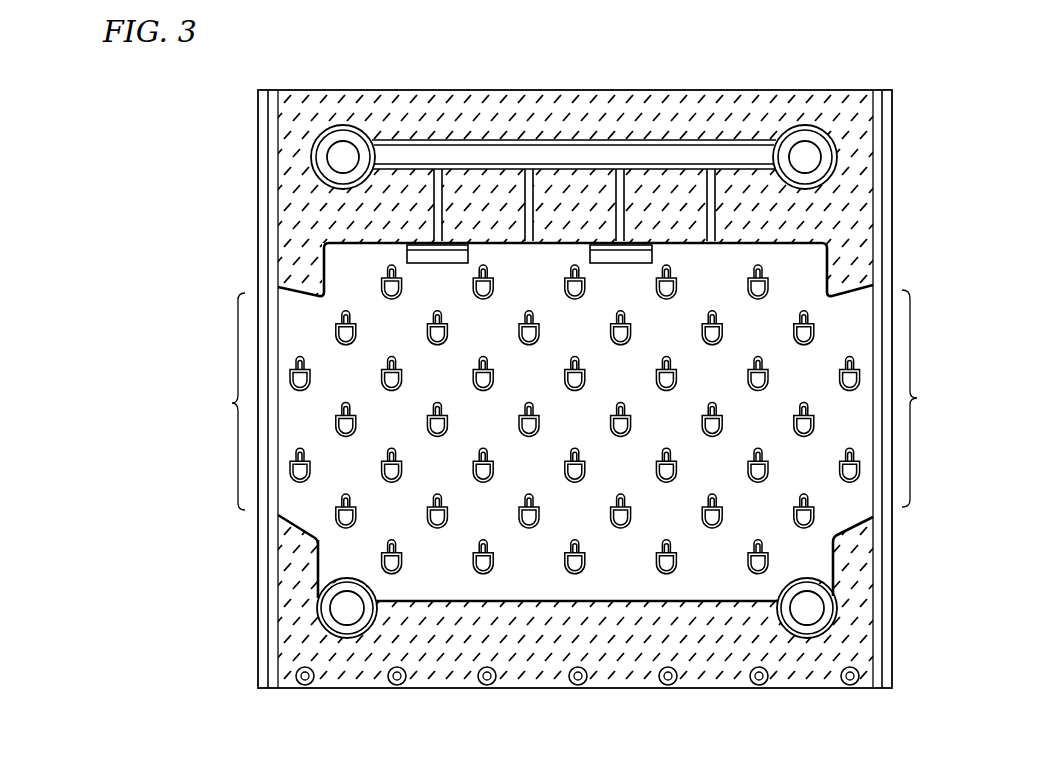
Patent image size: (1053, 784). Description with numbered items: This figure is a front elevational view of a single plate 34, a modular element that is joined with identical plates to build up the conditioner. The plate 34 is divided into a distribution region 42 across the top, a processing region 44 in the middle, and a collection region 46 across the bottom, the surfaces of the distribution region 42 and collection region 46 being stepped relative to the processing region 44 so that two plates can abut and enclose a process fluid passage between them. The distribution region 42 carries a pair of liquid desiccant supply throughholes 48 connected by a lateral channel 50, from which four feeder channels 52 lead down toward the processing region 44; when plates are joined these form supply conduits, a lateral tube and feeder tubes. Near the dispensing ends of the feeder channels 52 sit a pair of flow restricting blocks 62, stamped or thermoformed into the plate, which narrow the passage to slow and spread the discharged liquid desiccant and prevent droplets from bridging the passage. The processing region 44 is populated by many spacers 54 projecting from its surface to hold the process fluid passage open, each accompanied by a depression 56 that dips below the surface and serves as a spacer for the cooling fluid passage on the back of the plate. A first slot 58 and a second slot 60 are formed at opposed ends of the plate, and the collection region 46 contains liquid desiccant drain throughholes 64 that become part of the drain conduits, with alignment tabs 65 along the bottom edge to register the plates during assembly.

The plate 34 is at (994, 102).
The distribution region 42 is at (868, 179).
The processing region 44 is at (715, 582).
The collection region 46 is at (868, 602).
The liquid desiccant supply throughholes 48 is at (343, 150).
The lateral channel 50 is at (604, 155).
The feeder channels 52 is at (438, 236).
The spacers 54 is at (580, 419).
The depressions 56 is at (767, 375).
The first slot 58 is at (923, 398).
The second slot 60 is at (223, 401).
The flow restricting blocks 62 is at (447, 262).
The liquid desiccant drain throughholes 64 is at (347, 610).
The alignment tabs 65 is at (305, 686).